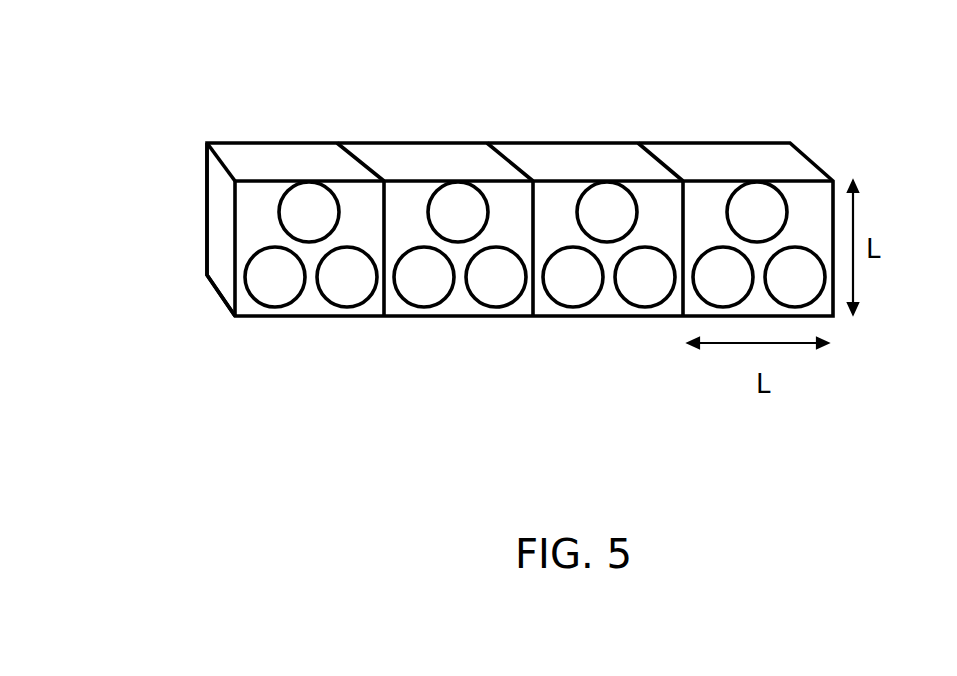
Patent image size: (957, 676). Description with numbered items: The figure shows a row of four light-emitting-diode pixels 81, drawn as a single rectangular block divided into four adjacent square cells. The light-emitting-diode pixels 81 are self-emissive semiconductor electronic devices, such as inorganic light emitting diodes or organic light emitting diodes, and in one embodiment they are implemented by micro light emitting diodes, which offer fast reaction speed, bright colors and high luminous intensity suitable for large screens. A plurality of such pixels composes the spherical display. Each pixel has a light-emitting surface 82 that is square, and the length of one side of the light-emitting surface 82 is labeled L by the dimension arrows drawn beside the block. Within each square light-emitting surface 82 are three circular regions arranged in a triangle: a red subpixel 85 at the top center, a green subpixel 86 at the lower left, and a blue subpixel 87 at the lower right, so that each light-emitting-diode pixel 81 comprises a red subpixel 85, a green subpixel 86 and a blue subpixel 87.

The light-emitting-diode pixel 81 is at (270, 138).
The light-emitting surface 82 is at (253, 220).
The red subpixel 85 is at (453, 202).
The green subpixel 86 is at (427, 308).
The blue subpixel 87 is at (495, 308).